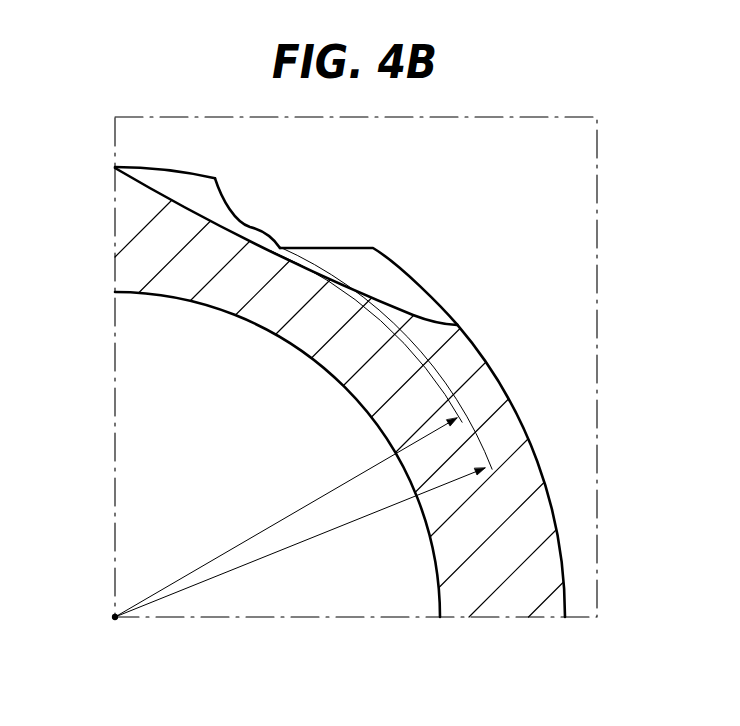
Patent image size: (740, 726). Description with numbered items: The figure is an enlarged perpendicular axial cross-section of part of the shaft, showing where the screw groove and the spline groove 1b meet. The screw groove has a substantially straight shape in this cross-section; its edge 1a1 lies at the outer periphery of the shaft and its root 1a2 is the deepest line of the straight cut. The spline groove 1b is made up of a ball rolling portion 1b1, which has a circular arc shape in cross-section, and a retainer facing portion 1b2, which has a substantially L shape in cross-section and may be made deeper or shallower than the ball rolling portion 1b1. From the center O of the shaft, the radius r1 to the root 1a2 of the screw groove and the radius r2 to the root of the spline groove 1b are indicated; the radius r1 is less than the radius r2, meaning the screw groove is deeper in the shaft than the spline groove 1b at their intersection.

The edge of the screw groove 1a1 is at (117, 168).
The root of the screw groove 1a2 is at (282, 253).
The spline groove 1b is at (336, 238).
The ball rolling portion 1b1 is at (228, 205).
The retainer facing portion 1b2 is at (323, 248).
The root diameter of the screw groove r1 is at (288, 434).
The root diameter of the spline groove r2 is at (303, 432).
The center of the shaft O is at (112, 618).